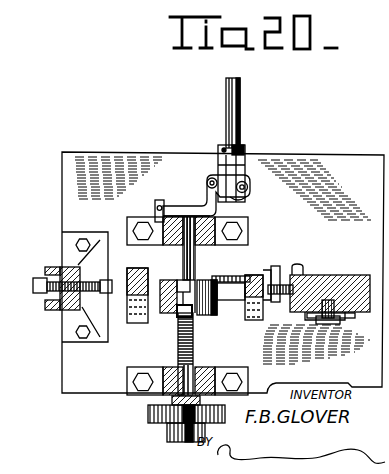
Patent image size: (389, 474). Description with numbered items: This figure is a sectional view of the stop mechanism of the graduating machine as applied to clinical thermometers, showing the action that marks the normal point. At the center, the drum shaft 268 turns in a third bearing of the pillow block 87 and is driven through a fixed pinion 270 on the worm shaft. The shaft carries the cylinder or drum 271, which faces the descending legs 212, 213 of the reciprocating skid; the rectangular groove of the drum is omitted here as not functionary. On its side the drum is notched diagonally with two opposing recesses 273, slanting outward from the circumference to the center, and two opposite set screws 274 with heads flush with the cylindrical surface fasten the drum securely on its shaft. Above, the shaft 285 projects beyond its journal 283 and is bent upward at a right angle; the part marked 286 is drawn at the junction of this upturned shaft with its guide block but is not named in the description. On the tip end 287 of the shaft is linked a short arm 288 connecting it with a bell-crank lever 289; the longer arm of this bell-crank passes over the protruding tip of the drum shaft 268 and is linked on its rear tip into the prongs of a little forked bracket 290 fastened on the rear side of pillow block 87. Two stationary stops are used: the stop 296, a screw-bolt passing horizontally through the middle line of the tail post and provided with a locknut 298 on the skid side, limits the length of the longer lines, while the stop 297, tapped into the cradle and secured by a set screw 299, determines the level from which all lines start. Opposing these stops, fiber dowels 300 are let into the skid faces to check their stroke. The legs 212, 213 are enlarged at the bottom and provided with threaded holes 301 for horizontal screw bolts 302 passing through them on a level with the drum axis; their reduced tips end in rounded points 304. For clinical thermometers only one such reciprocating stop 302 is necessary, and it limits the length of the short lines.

The drum 271 is at (140, 217).
The pillow block 87 is at (165, 285).
The forked bracket 290 is at (158, 216).
The bell-crank lever 289 is at (202, 208).
The short arm 288 is at (233, 183).
The shaft 285 is at (241, 98).
The rod guide block 286 is at (237, 150).
The journal 283 is at (246, 182).
The tip end 287 is at (282, 168).
The fiber dowel 300 is at (117, 290).
The recess 273 is at (185, 281).
The screw bolt 302 is at (238, 277).
The set screw 299 is at (298, 275).
The stationary stop 296 is at (42, 296).
The locknut 298 is at (75, 293).
The threaded hole 301 is at (143, 312).
The rounded point 304 is at (231, 292).
The set screw 274 is at (215, 310).
The stationary stop 297 is at (282, 285).
The descending leg 212 is at (247, 322).
The descending leg 213 is at (140, 323).
The pinion 270 is at (176, 400).
The drum shaft 268 is at (168, 441).